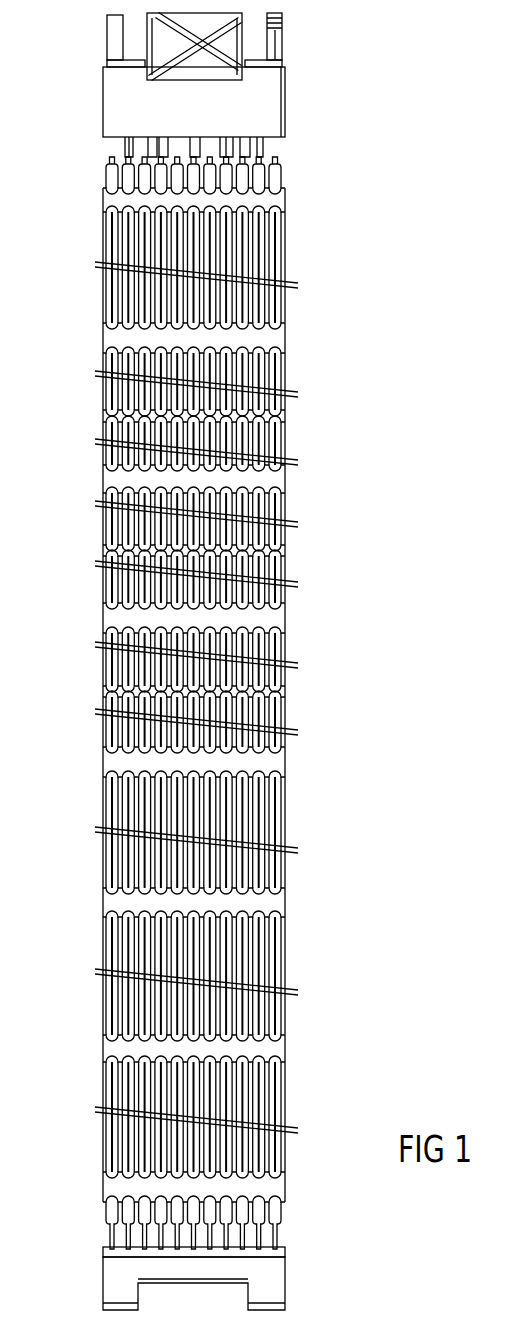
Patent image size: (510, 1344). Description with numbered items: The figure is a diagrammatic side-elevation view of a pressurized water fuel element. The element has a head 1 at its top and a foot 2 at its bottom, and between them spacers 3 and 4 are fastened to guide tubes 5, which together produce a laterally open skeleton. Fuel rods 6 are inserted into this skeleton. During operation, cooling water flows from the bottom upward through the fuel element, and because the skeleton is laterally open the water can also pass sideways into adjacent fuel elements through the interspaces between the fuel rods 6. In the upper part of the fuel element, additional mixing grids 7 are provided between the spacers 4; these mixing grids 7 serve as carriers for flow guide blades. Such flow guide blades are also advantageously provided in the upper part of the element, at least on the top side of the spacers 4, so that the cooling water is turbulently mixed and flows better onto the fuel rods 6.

The head 1 is at (135, 112).
The foot 2 is at (228, 1268).
The spacer 3 is at (262, 898).
The spacer 4 is at (115, 334).
The guide tube 5 is at (127, 1241).
The fuel rod 6 is at (265, 806).
The mixing grid 7 is at (272, 412).